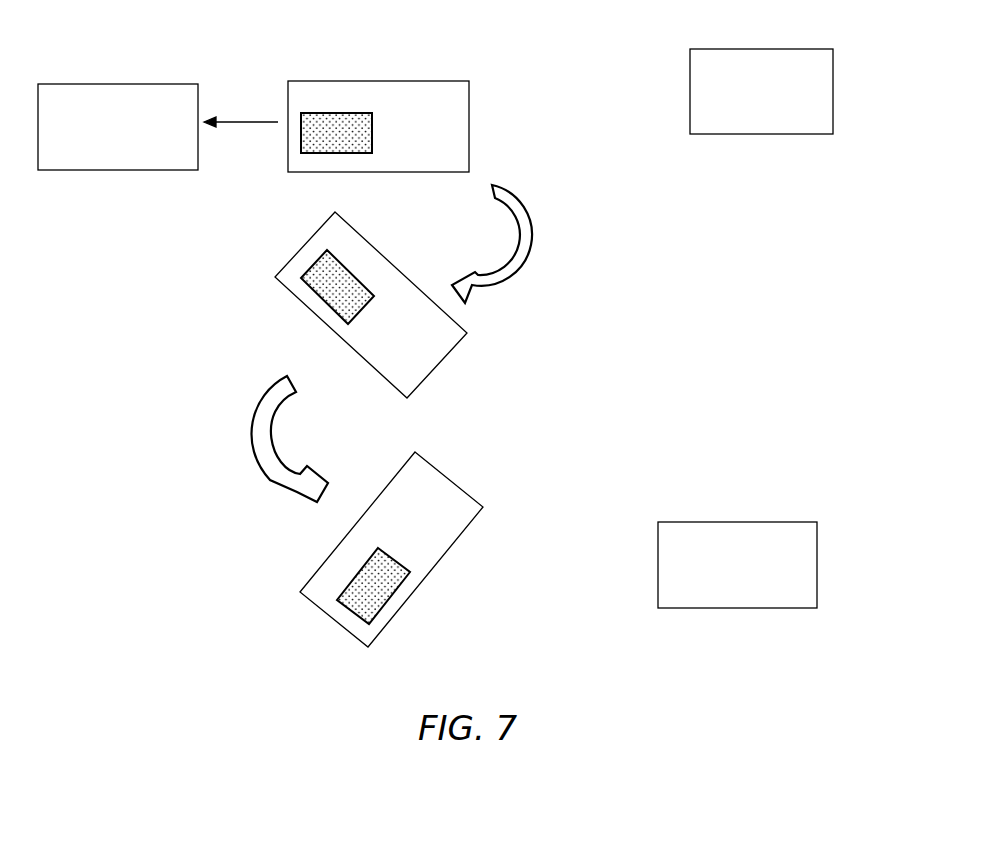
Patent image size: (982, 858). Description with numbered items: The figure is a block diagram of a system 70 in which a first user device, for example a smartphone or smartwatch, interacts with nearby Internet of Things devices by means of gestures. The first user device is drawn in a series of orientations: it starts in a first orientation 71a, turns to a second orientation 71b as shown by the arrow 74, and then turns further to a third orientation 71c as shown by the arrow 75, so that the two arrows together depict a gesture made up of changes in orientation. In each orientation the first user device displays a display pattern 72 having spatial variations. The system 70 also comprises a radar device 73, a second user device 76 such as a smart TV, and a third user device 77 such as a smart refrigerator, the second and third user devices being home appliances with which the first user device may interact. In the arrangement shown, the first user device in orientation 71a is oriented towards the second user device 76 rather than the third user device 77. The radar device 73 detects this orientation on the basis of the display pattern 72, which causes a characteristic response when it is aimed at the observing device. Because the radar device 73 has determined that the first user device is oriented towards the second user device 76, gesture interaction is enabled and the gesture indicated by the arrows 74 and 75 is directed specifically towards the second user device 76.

The system 70 is at (722, 675).
The first orientation of first user device 71a is at (400, 81).
The second orientation of first user device 71b is at (387, 254).
The third orientation of first user device 71c is at (438, 470).
The display pattern 72 is at (313, 112).
The radar device 73 is at (740, 49).
The arrow 74 is at (530, 217).
The arrow 75 is at (273, 465).
The second user device 76 is at (93, 84).
The third user device 77 is at (712, 521).